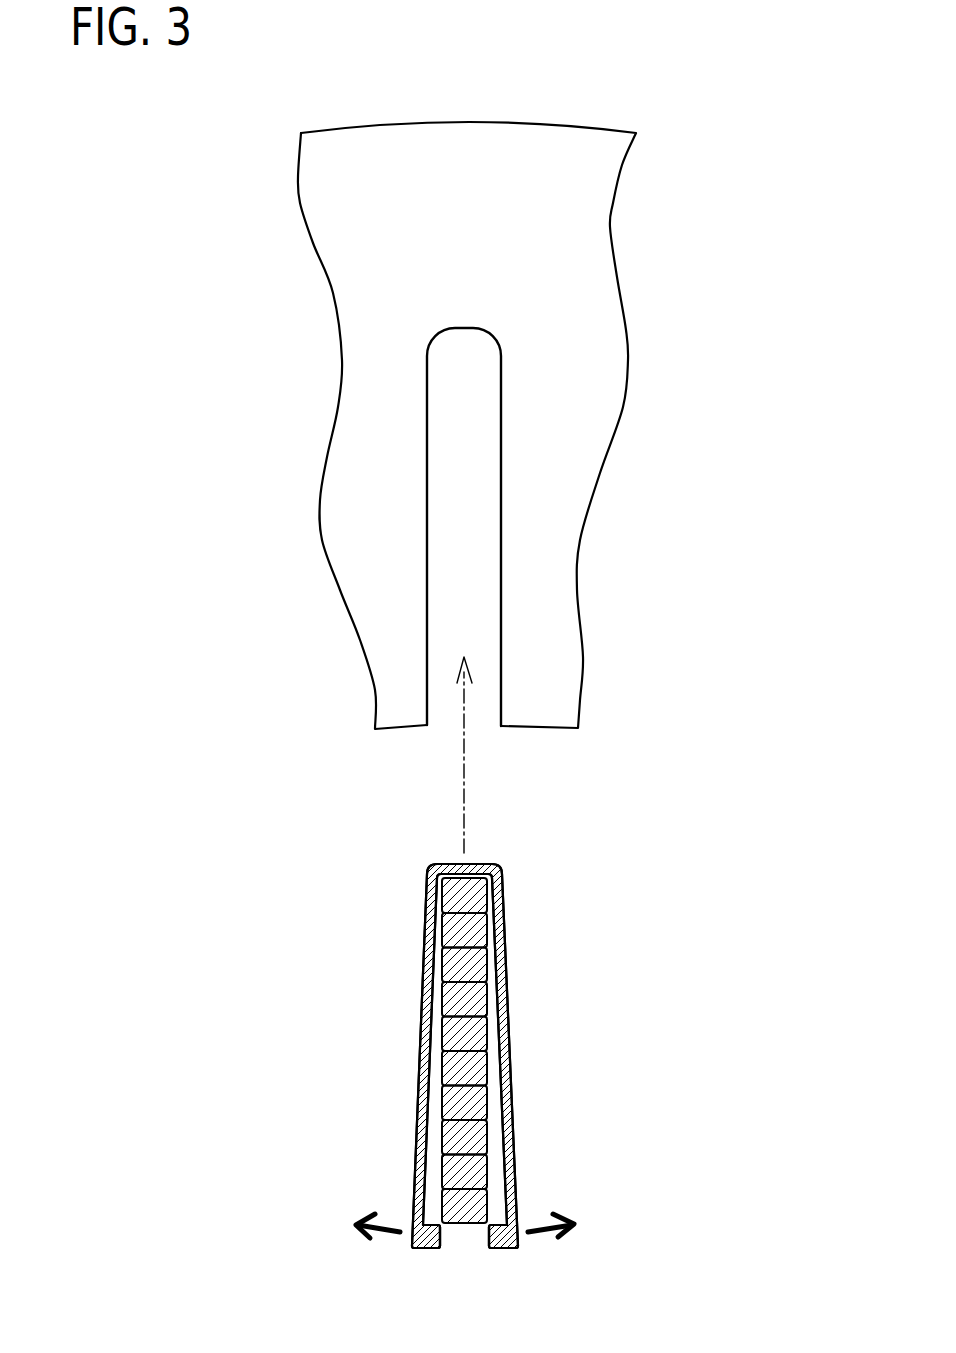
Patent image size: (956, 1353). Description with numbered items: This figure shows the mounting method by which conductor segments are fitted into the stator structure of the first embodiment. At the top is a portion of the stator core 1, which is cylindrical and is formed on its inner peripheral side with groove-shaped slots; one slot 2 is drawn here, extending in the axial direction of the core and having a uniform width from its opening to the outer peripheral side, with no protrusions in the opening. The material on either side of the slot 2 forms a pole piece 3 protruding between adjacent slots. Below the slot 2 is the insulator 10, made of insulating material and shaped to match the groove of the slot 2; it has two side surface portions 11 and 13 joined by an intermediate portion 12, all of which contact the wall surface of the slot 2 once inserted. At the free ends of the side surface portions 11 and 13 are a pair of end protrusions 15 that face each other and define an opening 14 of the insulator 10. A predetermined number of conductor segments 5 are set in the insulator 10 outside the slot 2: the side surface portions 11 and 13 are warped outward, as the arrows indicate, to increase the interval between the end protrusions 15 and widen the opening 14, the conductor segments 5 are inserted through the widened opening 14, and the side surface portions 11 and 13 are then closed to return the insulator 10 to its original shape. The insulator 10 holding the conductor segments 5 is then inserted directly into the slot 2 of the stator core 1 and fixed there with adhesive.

The stator core 1 is at (578, 138).
The slot 2 is at (500, 477).
The pole piece 3 is at (348, 452).
The conductor segment 5 is at (483, 1032).
The insulator 10 is at (487, 867).
The side surface portion 11 is at (427, 1028).
The intermediate portion 12 is at (456, 863).
The side surface portion 13 is at (503, 987).
The opening 14 is at (467, 1242).
The end protrusion 15 is at (425, 1251).